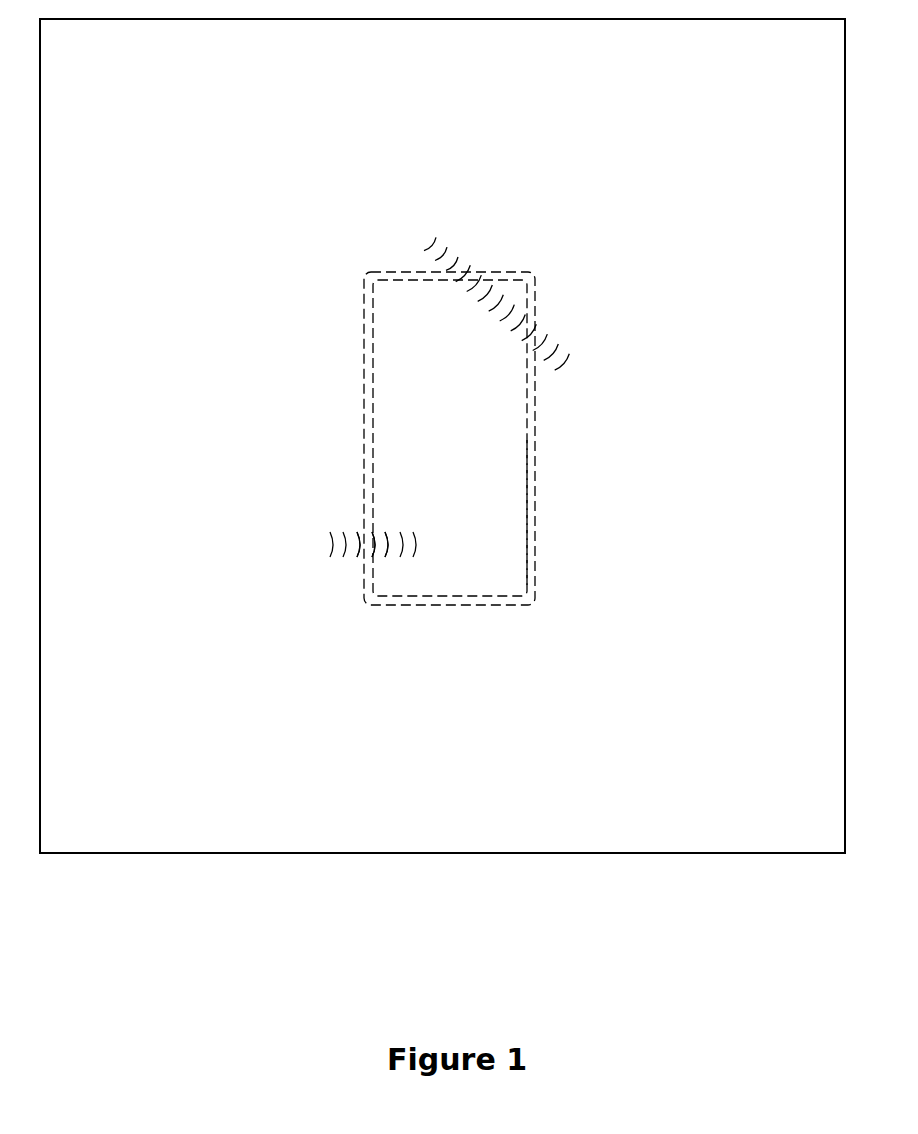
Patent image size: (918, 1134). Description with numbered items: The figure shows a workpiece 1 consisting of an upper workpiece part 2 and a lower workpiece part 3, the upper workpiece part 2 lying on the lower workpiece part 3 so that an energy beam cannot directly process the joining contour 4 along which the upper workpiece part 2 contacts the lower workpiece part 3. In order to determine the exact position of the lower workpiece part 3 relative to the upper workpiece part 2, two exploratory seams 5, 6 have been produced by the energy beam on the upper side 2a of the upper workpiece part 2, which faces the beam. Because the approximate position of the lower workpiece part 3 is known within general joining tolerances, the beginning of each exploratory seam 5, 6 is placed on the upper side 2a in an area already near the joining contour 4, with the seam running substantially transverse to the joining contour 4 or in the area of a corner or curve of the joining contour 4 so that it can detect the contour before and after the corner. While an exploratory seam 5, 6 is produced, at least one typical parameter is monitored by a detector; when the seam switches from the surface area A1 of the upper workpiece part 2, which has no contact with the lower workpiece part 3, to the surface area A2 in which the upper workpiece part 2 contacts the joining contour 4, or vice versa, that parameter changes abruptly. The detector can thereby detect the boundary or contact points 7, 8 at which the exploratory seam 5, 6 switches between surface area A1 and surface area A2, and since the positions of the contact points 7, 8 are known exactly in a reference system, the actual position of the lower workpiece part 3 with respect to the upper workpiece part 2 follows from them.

The surface area A1 is at (127, 111).
The surface area A2 is at (365, 319).
The workpiece 1 is at (120, 893).
The upper workpiece part 2 is at (293, 838).
The upper side 2a is at (692, 843).
The lower workpiece part 3 is at (535, 427).
The joining contour 4 is at (530, 513).
The exploratory seam 5 is at (330, 545).
The exploratory seam 6 is at (426, 247).
The contact point 7 is at (462, 272).
The contact point 8 is at (526, 327).